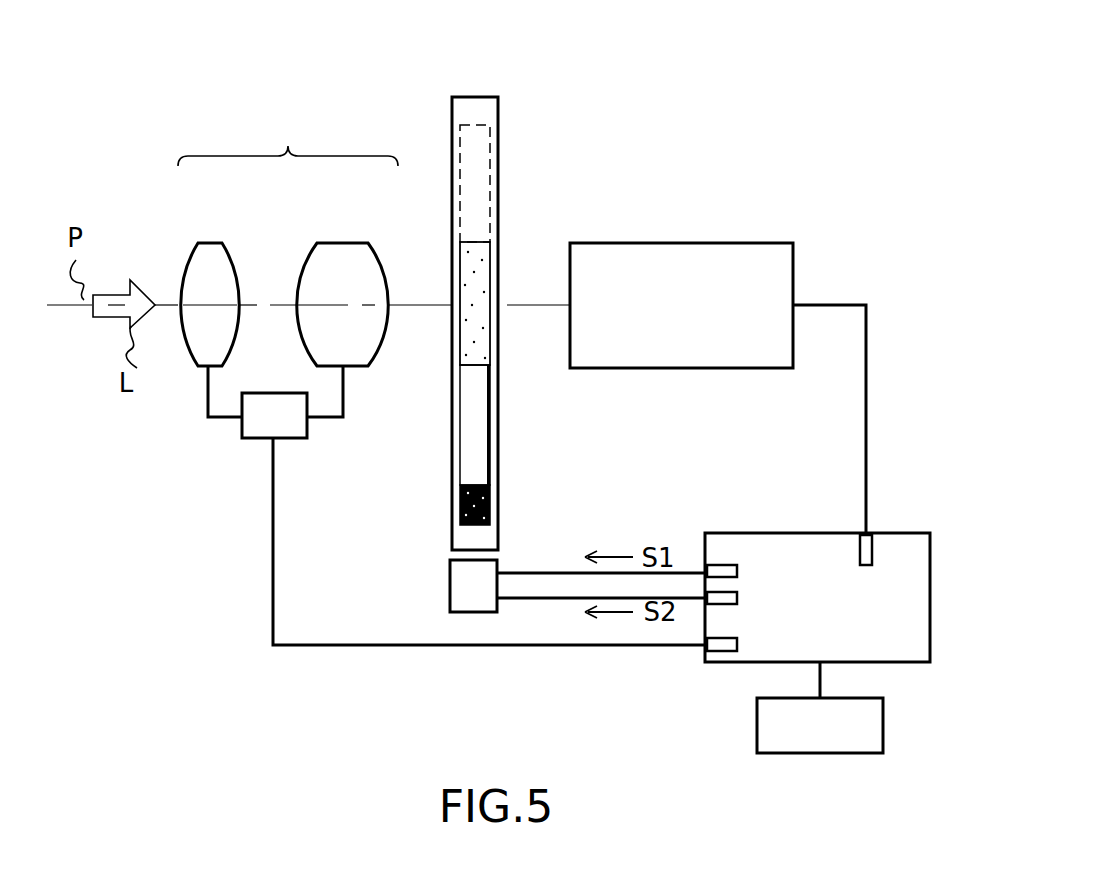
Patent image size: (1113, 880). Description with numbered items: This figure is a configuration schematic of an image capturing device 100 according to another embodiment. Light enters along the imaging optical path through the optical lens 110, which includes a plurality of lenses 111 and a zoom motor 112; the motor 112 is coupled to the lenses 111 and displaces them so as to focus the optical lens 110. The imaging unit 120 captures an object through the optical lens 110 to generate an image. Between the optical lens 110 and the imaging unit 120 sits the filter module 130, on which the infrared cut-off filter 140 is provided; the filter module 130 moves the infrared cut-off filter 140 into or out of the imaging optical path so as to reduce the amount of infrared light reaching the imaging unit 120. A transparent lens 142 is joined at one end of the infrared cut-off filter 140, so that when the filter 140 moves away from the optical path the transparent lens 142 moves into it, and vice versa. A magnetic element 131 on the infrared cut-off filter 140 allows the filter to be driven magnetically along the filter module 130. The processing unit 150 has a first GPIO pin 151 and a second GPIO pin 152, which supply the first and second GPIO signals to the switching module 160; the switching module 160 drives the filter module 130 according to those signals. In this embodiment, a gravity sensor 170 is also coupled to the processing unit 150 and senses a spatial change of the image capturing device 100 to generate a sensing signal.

The image capturing device 100 is at (1013, 98).
The optical lens 110 is at (288, 137).
The lenses 111 is at (218, 243).
The zoom motor 112 is at (268, 402).
The imaging unit 120 is at (705, 343).
The filter module 130 is at (498, 122).
The magnetic element 131 is at (460, 512).
The infrared cut-off filter 140 is at (492, 241).
The transparent lens 142 is at (490, 430).
The processing unit 150 is at (865, 648).
The first GPIO pin 151 is at (738, 570).
The second GPIO pin 152 is at (738, 598).
The switching module 160 is at (450, 593).
The gravity sensor 170 is at (797, 745).